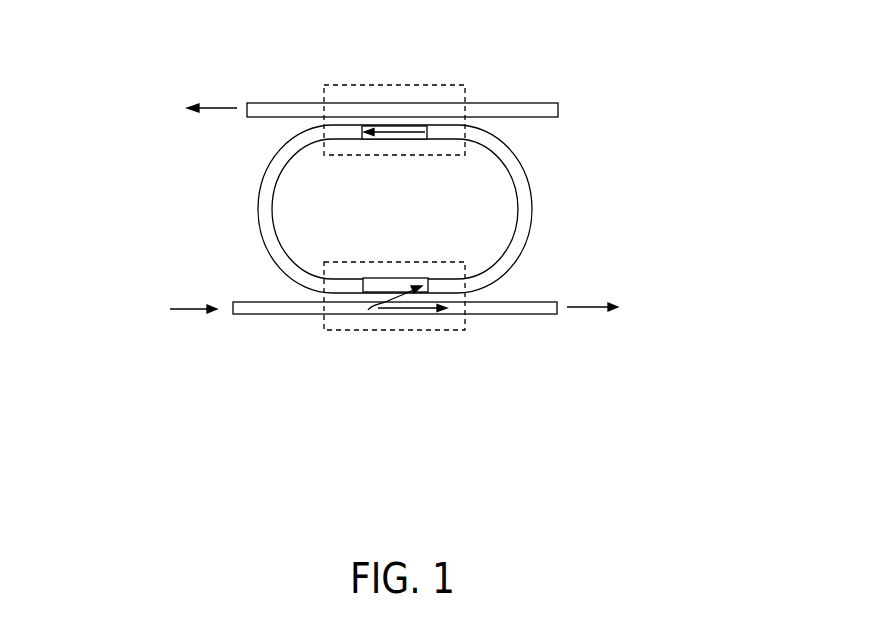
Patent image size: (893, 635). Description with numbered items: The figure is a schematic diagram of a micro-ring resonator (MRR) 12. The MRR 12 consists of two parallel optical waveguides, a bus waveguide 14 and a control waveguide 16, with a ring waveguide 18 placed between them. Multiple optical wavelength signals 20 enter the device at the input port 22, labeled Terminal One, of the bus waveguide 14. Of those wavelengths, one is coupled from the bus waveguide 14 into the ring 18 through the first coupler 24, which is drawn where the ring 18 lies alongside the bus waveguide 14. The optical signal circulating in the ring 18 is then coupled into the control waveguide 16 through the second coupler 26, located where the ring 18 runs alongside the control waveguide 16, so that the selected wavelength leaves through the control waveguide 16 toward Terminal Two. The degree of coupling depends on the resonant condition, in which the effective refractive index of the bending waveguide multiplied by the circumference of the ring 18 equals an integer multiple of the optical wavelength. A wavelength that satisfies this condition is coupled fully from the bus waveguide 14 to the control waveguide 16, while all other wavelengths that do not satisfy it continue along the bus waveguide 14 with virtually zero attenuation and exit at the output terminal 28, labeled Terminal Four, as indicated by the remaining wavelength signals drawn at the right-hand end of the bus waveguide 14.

The micro-ring resonator 12 is at (675, 40).
The bus waveguide 14 is at (290, 314).
The control waveguide 16 is at (283, 103).
The ring waveguide 18 is at (258, 205).
The multiple optical wavelength signals 20 is at (117, 365).
The input port 22 is at (262, 302).
The Coupler 1 24 is at (393, 248).
The Coupler 2 26 is at (382, 170).
The output Terminal 4 28 is at (569, 262).